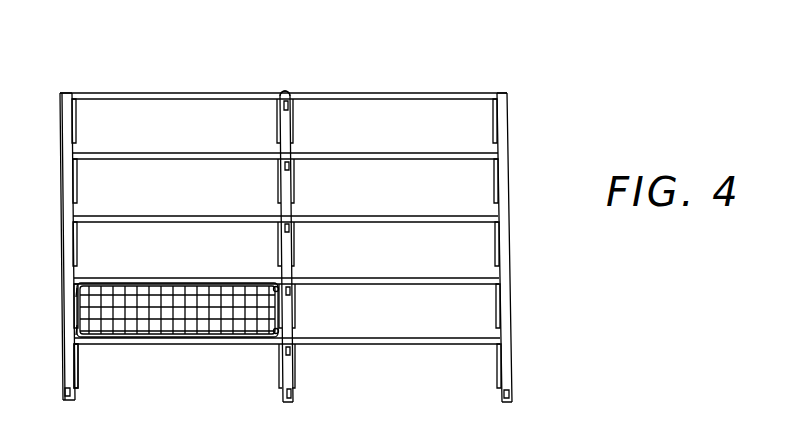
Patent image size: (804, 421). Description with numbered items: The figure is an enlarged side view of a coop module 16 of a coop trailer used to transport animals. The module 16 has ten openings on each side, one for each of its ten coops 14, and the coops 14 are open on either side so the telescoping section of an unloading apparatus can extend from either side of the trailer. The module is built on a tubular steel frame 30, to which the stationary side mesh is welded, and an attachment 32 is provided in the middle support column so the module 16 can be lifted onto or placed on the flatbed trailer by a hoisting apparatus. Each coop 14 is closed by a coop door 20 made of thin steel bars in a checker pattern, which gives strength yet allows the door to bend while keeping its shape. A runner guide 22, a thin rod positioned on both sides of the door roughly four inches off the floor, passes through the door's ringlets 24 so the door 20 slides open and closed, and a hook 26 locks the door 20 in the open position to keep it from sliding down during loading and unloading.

The coop module 16 is at (413, 72).
The coop 14 is at (176, 100).
The tubular steel frame 30 is at (506, 129).
The attachment 32 is at (285, 91).
The coop door 20 is at (147, 283).
The runner guide 22 is at (78, 370).
The ringlets 24 is at (80, 285).
The hook 26 is at (190, 280).